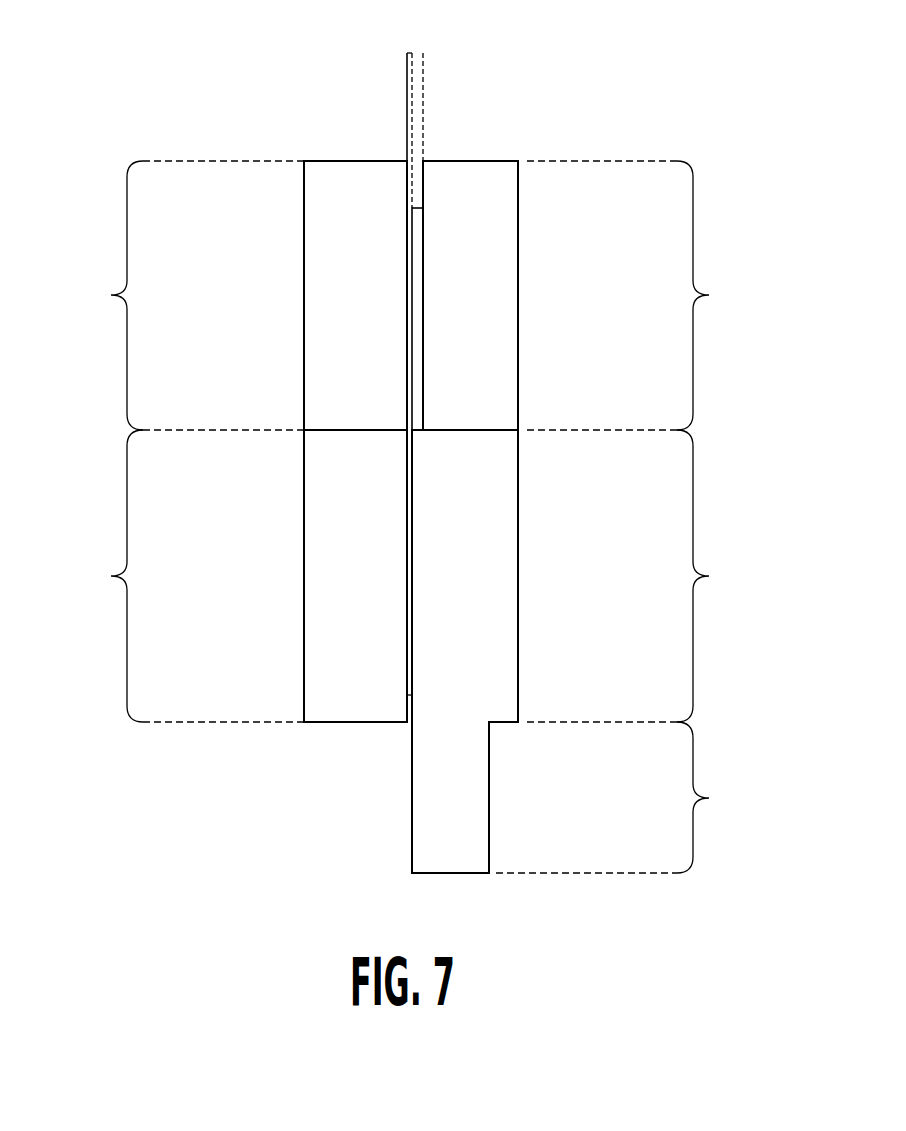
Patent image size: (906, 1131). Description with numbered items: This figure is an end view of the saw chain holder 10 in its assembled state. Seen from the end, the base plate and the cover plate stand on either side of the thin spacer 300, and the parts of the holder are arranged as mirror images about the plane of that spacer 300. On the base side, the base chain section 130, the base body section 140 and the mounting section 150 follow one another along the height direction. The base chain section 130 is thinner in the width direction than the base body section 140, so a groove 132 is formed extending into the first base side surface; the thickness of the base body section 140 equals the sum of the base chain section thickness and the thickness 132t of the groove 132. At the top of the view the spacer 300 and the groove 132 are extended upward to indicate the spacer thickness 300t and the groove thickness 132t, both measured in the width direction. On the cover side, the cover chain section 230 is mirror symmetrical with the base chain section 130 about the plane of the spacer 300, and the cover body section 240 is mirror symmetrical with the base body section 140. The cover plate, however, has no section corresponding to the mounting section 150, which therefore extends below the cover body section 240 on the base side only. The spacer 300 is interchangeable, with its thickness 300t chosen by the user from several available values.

The saw chain holder 10 is at (652, 136).
The base chain section 130 is at (598, 295).
The base body section 140 is at (648, 576).
The mounting section 150 is at (629, 797).
The cover chain section 230 is at (230, 295).
The cover body section 240 is at (178, 576).
The spacer 300 is at (408, 732).
The thickness of the spacer 300t is at (409, 73).
The groove 132 is at (413, 190).
The thickness of the groove 132t is at (412, 107).